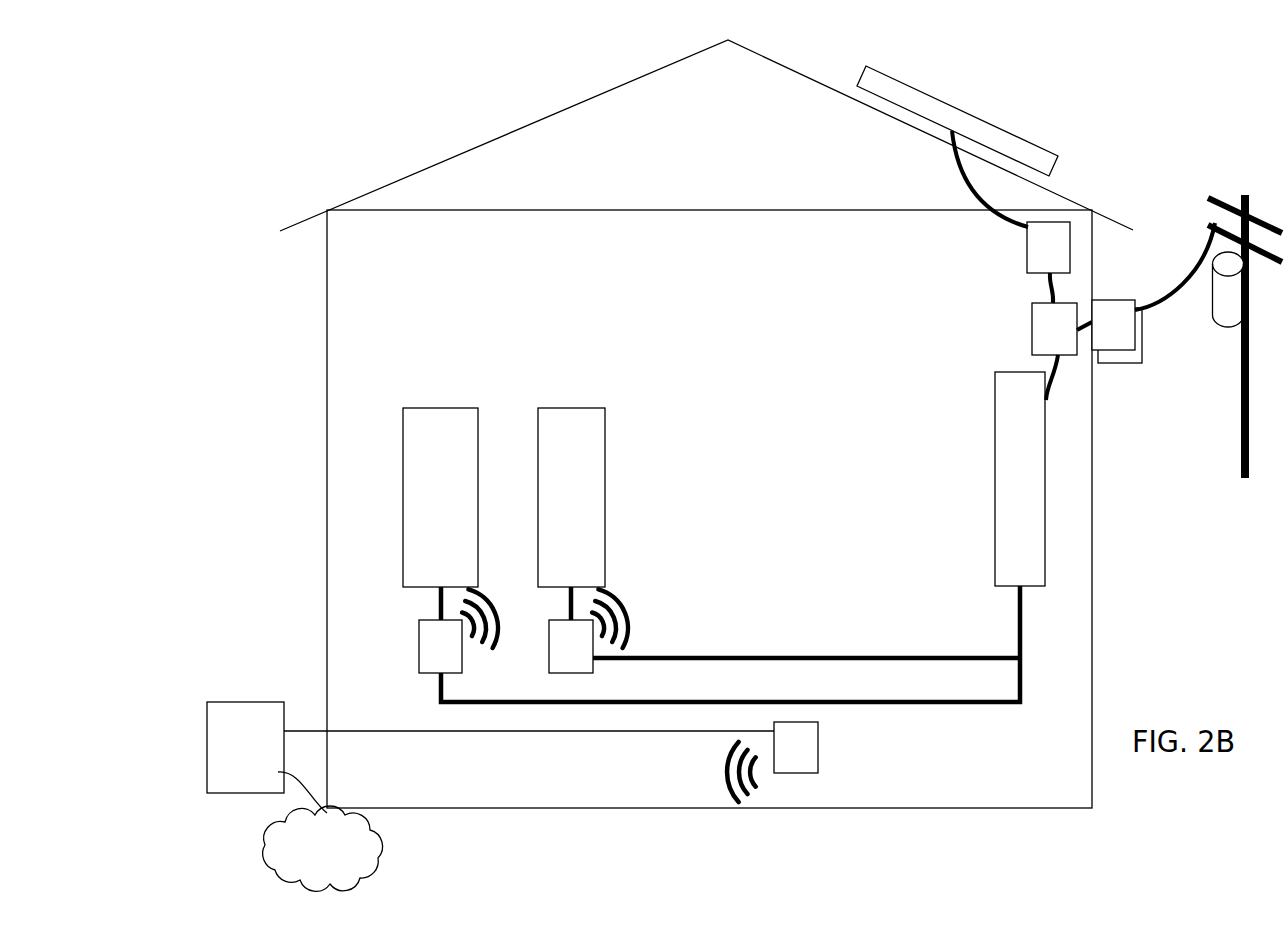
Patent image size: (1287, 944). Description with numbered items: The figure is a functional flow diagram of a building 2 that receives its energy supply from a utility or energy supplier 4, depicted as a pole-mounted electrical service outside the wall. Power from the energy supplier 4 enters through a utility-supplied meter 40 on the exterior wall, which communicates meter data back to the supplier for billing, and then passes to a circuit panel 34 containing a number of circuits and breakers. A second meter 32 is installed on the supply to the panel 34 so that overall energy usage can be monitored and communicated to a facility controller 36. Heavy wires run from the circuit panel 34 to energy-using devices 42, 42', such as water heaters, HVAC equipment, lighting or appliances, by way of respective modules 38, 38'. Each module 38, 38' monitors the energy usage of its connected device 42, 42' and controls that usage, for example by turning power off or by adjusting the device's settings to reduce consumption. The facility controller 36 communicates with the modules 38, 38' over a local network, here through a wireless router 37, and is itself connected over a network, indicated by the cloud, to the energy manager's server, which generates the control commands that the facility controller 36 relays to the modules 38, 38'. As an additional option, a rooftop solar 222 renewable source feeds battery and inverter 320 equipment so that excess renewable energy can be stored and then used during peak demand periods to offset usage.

The building 2 is at (348, 200).
The solar 222 is at (1015, 130).
The battery and inverter 320 is at (1070, 228).
The second meter 32 is at (1032, 303).
The meter 40 is at (1110, 350).
The utility/energy supplier (ES) 4 is at (1220, 190).
The circuit panel 34 is at (995, 402).
The device 42 is at (428, 472).
The device 42' is at (564, 472).
The module 38 is at (694, 644).
The module 38' is at (758, 631).
The facility controller 36 is at (250, 700).
The wireless router 37 is at (790, 762).